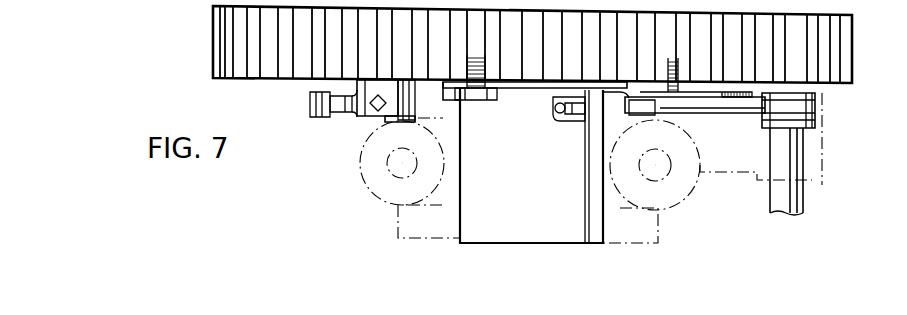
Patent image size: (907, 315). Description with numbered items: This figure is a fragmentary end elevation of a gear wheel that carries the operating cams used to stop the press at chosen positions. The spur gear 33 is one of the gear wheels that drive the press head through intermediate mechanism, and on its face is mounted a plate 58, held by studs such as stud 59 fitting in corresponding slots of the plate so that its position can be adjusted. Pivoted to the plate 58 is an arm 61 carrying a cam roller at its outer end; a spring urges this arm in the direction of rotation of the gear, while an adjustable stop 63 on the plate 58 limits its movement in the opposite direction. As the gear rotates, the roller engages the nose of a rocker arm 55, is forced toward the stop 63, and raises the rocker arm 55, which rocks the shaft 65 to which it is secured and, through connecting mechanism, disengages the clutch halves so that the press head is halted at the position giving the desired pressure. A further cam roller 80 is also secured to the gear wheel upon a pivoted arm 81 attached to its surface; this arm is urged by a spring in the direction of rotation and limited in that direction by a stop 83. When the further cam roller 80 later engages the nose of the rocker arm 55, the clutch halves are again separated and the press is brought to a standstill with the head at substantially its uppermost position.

The spur gear 33 is at (847, 53).
The rocker arm 55 is at (739, 106).
The plate 58 is at (541, 89).
The stud 59 is at (475, 99).
The arm 61 is at (612, 110).
The adjustable stop 63 is at (558, 117).
The shaft 65 is at (805, 199).
The further cam roller 80 is at (312, 106).
The pivoted arm 81 is at (413, 118).
The stop 83 is at (372, 112).